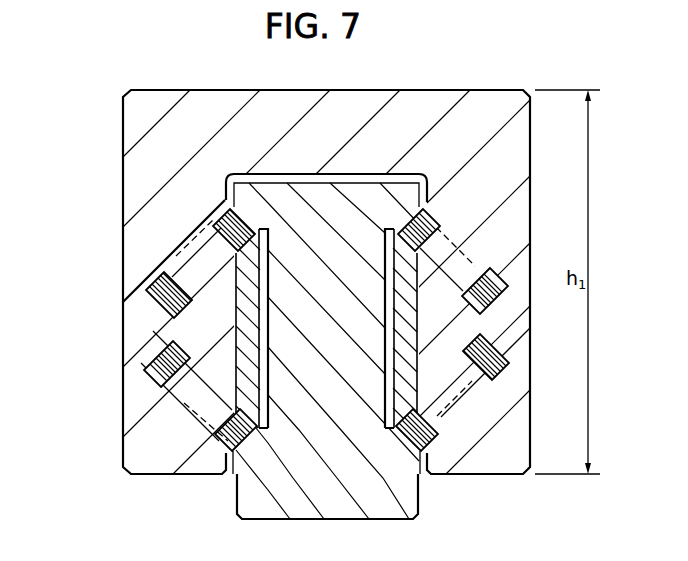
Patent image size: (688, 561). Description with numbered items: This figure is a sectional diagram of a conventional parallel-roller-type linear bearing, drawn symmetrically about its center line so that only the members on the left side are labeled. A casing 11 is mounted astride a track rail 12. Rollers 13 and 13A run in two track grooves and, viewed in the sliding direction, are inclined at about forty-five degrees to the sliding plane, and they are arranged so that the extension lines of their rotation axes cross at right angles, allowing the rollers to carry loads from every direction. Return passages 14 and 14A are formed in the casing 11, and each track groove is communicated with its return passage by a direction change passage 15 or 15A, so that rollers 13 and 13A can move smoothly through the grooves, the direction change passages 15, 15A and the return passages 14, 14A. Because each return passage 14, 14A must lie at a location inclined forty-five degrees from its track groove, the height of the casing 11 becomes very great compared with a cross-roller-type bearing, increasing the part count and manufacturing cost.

The casing 11 is at (143, 186).
The track rail 12 is at (246, 497).
The roller 13 is at (236, 224).
The roller 13A is at (250, 443).
The return passage 14 is at (123, 303).
The return passage 14A is at (158, 368).
The direction change passage 15 is at (170, 257).
The direction change passage 15A is at (184, 404).